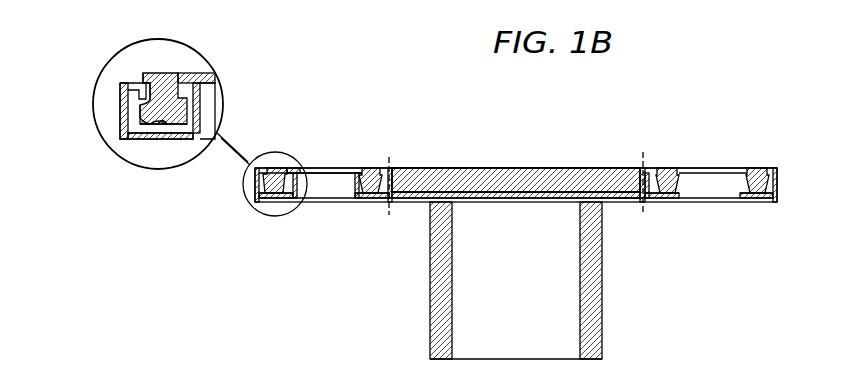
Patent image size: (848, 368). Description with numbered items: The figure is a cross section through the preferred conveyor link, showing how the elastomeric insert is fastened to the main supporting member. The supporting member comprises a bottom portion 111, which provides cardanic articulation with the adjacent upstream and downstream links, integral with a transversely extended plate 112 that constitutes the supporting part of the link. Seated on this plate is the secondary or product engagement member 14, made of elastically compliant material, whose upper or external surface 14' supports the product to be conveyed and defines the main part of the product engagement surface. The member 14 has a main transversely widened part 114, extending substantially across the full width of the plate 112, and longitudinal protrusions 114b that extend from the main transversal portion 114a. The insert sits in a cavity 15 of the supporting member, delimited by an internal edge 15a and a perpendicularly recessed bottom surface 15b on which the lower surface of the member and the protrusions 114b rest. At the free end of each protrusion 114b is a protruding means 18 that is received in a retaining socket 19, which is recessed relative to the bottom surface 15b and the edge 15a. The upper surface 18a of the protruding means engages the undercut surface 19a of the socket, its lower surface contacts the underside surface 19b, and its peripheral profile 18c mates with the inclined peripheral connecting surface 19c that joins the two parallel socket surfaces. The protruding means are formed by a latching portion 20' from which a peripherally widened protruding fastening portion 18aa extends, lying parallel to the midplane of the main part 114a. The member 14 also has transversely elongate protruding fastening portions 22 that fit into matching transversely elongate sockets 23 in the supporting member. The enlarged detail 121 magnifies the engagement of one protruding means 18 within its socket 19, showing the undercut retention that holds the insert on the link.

The secondary or product engagement member 14 is at (516, 135).
The upper or external surface 14' is at (516, 150).
The cavity 15 is at (397, 180).
The internal edge 15a is at (137, 82).
The bottom surface 15b is at (633, 167).
The protruding means 18 is at (277, 192).
The upper surface of protruding means 18a is at (140, 93).
The protruding fastening portion 18aa is at (160, 124).
The peripheral profile 18c is at (138, 113).
The retaining socket 19 is at (175, 128).
The undercut surface 19a is at (143, 87).
The underside surface 19b is at (158, 126).
The peripheral connecting surface 19c is at (147, 123).
The latching portion 20' is at (190, 360).
The protruding fastening portion 22 is at (490, 182).
The retaining socket 23 is at (613, 192).
The bottom portion 111 is at (427, 307).
The transversely extended plate 112 is at (334, 205).
The main transversely widened part 114 is at (328, 166).
The main transversal portion 114a is at (542, 170).
The front longitudinal protrusion 114b is at (271, 167).
The detail region 121 is at (248, 188).